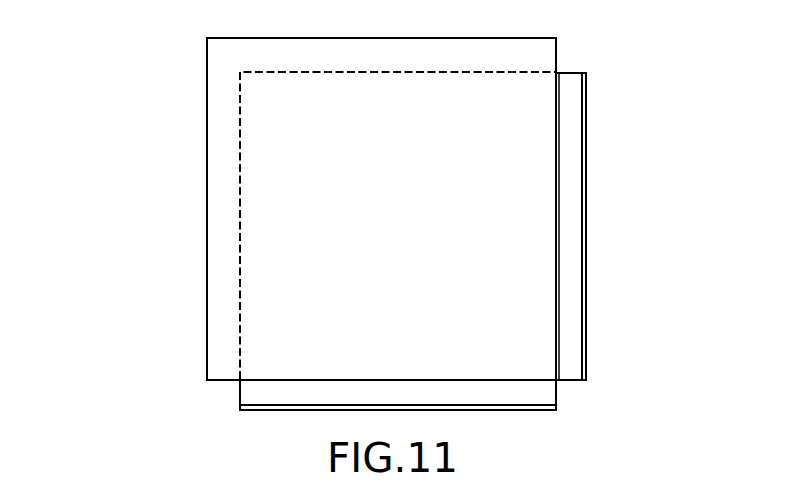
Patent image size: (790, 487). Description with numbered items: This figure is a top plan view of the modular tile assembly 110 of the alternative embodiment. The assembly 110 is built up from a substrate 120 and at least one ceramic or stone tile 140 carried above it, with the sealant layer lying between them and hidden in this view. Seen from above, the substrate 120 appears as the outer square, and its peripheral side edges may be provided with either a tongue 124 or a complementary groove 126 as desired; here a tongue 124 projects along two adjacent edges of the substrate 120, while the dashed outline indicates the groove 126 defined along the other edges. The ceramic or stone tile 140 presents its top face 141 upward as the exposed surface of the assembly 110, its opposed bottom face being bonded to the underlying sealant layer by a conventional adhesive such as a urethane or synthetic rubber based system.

The modular tile assembly 110 is at (150, 130).
The substrate 120 is at (566, 81).
The tongue 124 is at (583, 157).
The groove 126 is at (218, 285).
The ceramic or stone tile 140 is at (335, 175).
The top face 141 is at (388, 272).